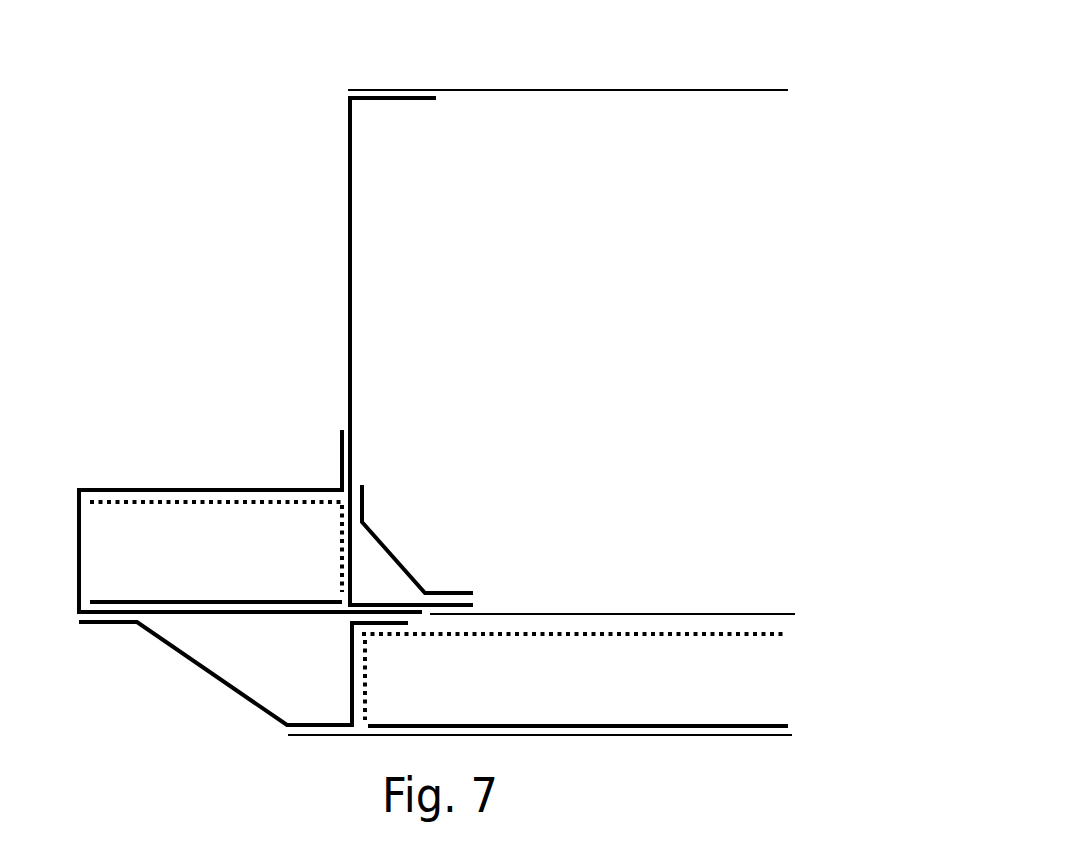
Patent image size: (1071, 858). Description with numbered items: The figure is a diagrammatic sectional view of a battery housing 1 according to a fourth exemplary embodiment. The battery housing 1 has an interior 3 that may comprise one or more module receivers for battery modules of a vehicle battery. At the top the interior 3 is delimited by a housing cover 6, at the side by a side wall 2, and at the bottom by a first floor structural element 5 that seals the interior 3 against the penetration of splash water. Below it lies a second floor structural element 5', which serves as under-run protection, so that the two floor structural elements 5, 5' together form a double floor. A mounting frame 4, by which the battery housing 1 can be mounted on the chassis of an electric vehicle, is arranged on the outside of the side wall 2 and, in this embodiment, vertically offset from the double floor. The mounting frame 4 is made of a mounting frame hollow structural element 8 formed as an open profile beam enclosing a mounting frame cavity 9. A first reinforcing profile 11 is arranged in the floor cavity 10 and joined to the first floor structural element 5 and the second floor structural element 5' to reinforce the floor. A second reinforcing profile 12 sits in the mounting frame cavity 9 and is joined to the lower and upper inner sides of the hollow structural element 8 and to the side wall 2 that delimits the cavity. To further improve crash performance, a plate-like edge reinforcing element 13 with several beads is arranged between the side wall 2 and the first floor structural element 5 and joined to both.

The battery housing 1 is at (292, 341).
The side wall 2 is at (349, 220).
The interior 3 is at (403, 326).
The mounting frame 4 is at (250, 556).
The first floor structural element 5 is at (612, 563).
The second floor structural element 5' is at (540, 781).
The housing cover 6 is at (572, 90).
The mounting frame hollow structural element 8 is at (140, 490).
The mounting frame cavity 9 is at (275, 489).
The floor cavity 10 is at (672, 685).
The first reinforcing profile 11 is at (688, 623).
The second reinforcing profile 12 is at (152, 598).
The edge reinforcing element 13 is at (413, 577).